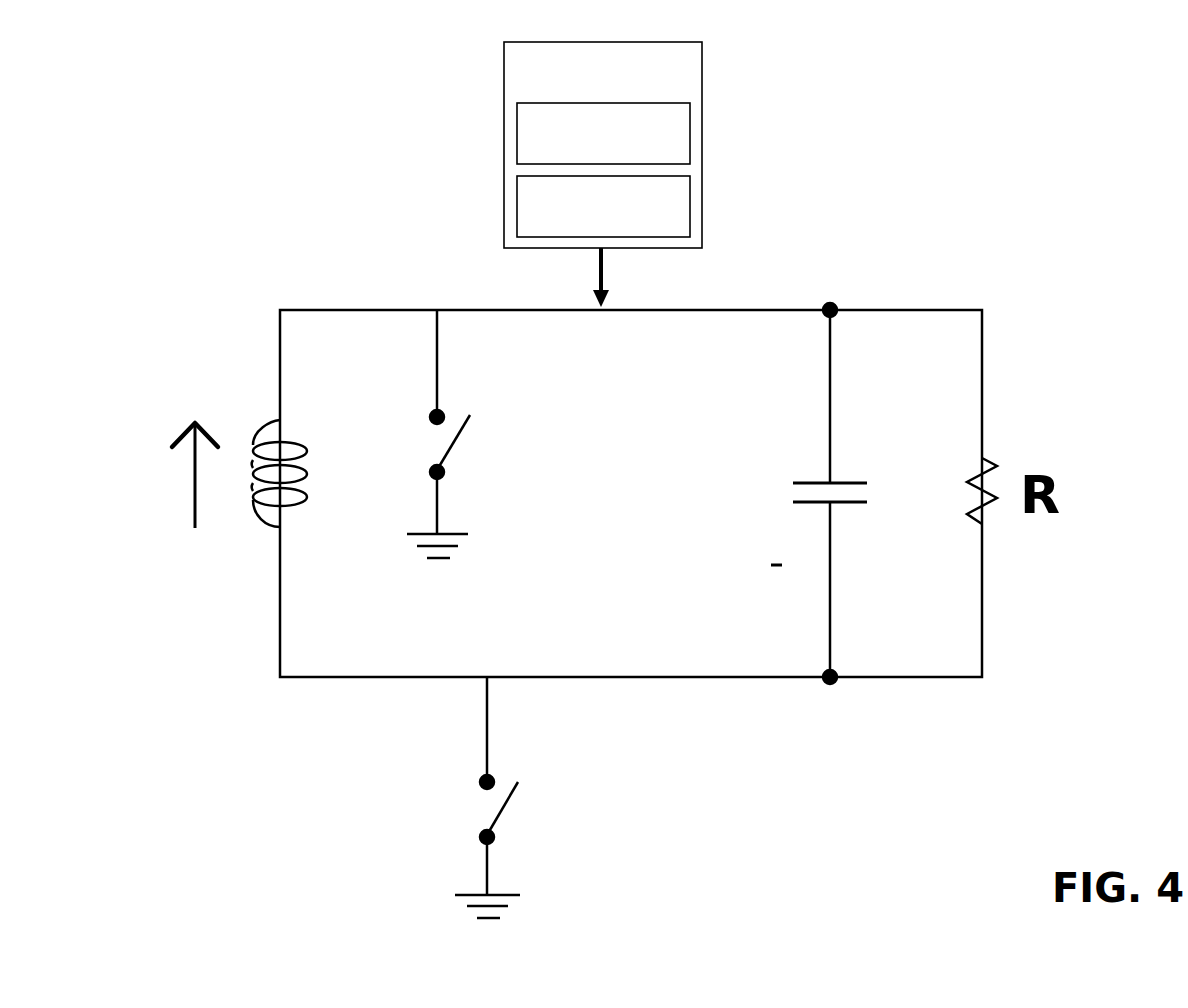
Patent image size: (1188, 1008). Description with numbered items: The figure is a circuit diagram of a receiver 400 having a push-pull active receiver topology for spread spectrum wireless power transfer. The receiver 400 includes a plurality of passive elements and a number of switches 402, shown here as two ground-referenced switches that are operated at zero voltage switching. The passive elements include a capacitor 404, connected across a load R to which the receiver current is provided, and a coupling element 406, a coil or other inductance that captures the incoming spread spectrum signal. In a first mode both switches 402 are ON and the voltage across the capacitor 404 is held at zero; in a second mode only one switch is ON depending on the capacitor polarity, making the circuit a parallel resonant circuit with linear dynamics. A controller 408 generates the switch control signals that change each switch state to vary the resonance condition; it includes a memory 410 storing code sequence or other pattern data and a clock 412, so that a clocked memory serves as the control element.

The receiver 400 is at (1046, 152).
The switches 402 is at (453, 397).
The capacitor 404 is at (853, 458).
The coupling element 406 is at (250, 402).
The controller 408 is at (695, 45).
The memory 410 is at (690, 117).
The clock 412 is at (690, 193).